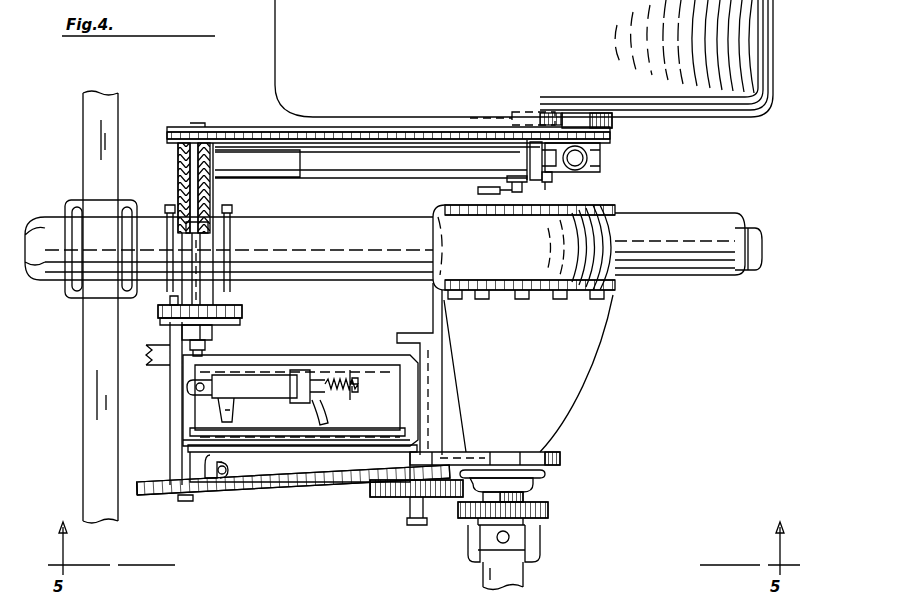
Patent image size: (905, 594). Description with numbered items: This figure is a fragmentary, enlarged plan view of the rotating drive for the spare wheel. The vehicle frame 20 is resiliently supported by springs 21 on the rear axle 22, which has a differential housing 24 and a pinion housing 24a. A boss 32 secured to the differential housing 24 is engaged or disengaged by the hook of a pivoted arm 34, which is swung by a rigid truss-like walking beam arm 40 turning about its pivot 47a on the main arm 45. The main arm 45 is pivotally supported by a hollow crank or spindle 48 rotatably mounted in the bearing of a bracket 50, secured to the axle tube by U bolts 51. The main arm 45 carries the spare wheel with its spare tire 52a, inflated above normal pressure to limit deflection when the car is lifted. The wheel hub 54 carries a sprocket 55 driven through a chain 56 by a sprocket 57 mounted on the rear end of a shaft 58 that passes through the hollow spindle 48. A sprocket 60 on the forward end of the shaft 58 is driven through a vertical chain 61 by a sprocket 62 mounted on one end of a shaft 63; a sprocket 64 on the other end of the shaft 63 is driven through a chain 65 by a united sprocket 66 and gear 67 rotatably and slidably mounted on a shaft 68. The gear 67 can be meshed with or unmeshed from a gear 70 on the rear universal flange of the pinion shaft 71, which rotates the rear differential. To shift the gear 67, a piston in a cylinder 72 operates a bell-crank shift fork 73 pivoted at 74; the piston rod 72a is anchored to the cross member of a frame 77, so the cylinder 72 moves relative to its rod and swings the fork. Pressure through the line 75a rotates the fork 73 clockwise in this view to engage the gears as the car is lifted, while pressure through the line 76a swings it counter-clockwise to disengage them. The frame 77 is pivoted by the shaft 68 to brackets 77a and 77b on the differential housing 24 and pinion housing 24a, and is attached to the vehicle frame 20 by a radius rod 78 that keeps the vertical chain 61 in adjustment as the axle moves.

The vehicle frame 20 is at (165, 362).
The springs 21 is at (93, 478).
The rear axle 22 is at (722, 213).
The differential housing 24 is at (620, 205).
The pinion housing 24a is at (550, 406).
The boss 32 is at (516, 178).
The pivoted arm 34 is at (478, 190).
The walking beam arm 40 is at (602, 155).
The main arm 45 is at (178, 158).
The pivot 47a is at (555, 183).
The hollow spindle 48 is at (198, 178).
The bracket 50 is at (205, 258).
The U bolts 51 is at (167, 233).
The spare tire 52a is at (455, 36).
The wheel hub 54 is at (520, 112).
The sprocket 55 is at (580, 130).
The chain 56 is at (407, 146).
The sprocket 57 is at (200, 125).
The shaft 58 is at (208, 226).
The sprocket 60 is at (228, 320).
The vertical chain 61 is at (242, 308).
The sprocket 62 is at (173, 296).
The shaft 63 is at (188, 501).
The sprocket 64 is at (180, 496).
The chain 65 is at (240, 492).
The sprocket 66 is at (405, 485).
The gear 67 is at (418, 500).
The shaft 68 is at (420, 522).
The gear 70 is at (550, 512).
The pinion shaft 71 is at (528, 494).
The cylinder 72 is at (262, 382).
The piston rod 72a is at (340, 380).
The bell-crank shift fork 73 is at (195, 415).
The pivot 74 is at (226, 470).
The line 75a is at (330, 410).
The line 76a is at (232, 412).
The frame 77 is at (258, 435).
The bracket 77a is at (432, 300).
The bracket 77b is at (440, 452).
The radius rod 78 is at (182, 325).